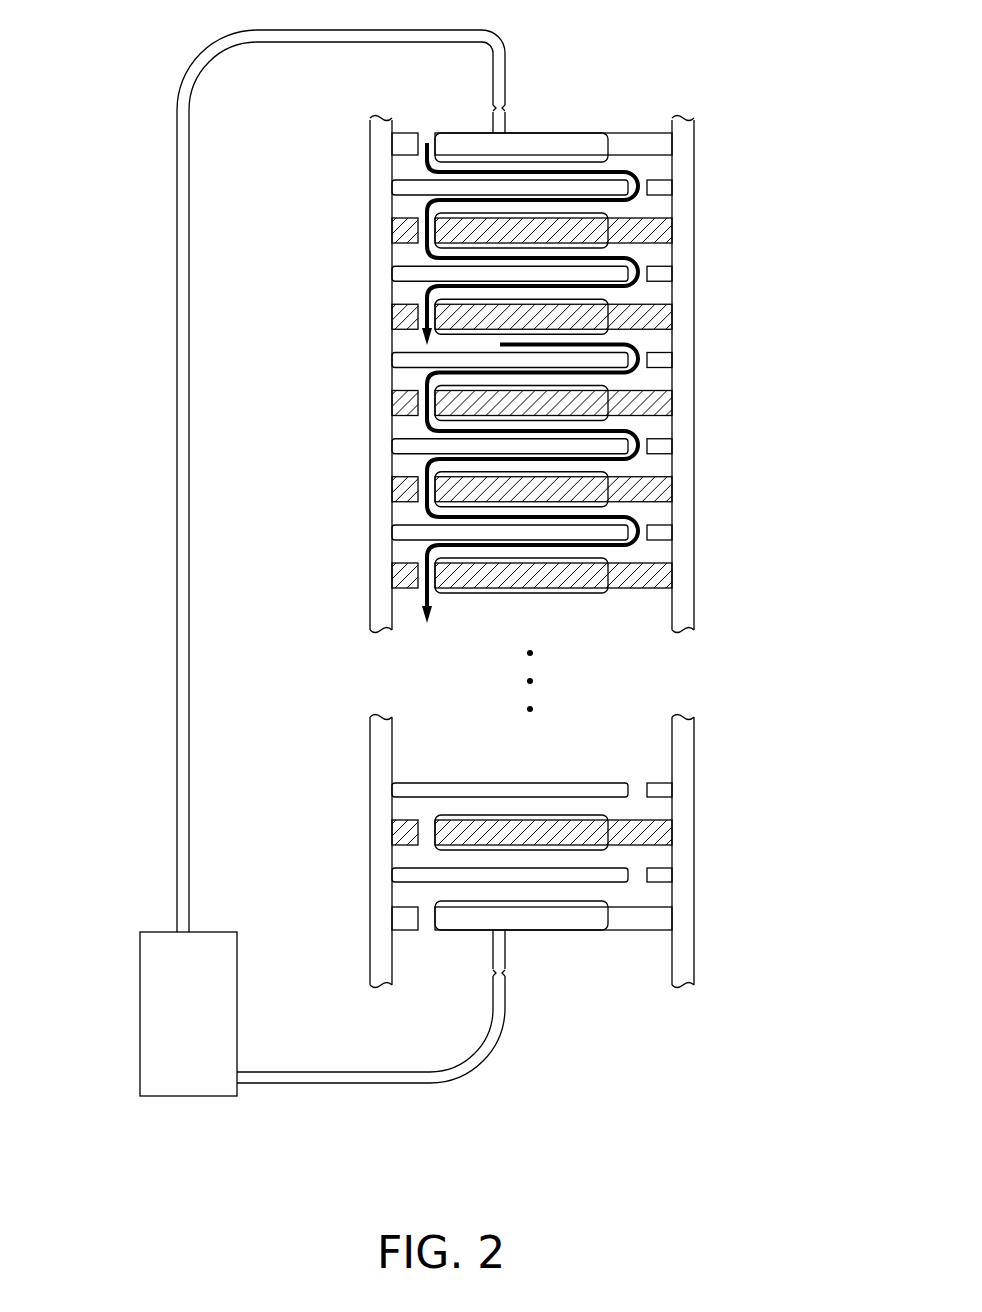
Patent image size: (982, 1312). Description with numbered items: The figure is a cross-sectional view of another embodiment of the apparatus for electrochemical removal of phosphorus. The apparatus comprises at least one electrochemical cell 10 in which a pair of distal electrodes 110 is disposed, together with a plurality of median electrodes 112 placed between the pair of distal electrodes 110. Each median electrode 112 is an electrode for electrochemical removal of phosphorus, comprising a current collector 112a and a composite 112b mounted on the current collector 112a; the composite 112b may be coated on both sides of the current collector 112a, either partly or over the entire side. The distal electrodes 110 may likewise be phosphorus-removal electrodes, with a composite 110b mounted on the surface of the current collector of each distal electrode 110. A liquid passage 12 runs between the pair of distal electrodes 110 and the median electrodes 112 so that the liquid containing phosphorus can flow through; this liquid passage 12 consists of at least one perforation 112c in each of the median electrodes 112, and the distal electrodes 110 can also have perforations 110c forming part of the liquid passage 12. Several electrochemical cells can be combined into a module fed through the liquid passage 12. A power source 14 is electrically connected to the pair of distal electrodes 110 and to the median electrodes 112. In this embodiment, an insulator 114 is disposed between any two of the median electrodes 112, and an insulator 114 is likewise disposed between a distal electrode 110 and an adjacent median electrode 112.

The electrochemical cell 10 is at (685, 253).
The liquid passage 12 is at (425, 298).
The power source 14 is at (152, 966).
The distal electrode 110 is at (626, 143).
The composite 110b is at (563, 157).
The perforation 110c is at (428, 146).
The median electrode 112 is at (440, 515).
The current collector 112a is at (405, 232).
The composite 112b is at (440, 218).
The perforation 112c is at (433, 230).
The insulator 114 is at (663, 187).